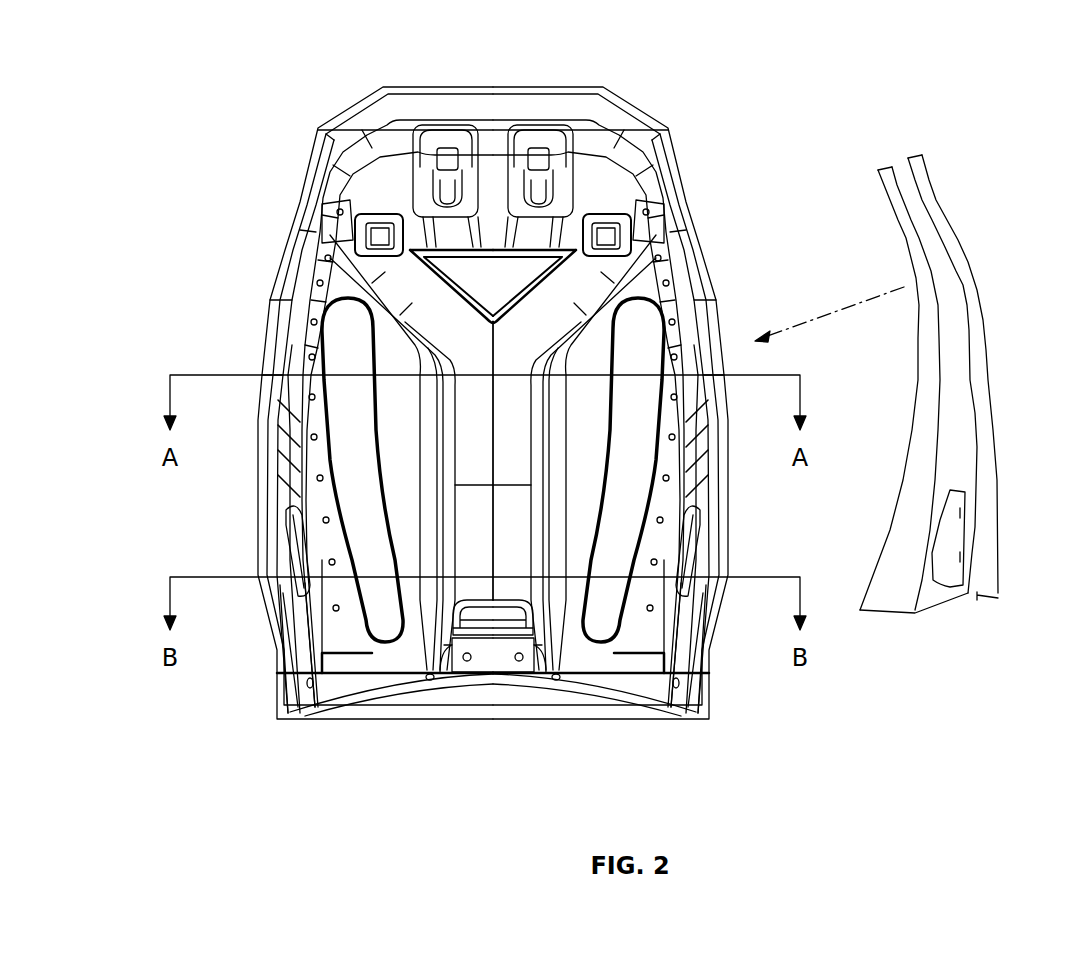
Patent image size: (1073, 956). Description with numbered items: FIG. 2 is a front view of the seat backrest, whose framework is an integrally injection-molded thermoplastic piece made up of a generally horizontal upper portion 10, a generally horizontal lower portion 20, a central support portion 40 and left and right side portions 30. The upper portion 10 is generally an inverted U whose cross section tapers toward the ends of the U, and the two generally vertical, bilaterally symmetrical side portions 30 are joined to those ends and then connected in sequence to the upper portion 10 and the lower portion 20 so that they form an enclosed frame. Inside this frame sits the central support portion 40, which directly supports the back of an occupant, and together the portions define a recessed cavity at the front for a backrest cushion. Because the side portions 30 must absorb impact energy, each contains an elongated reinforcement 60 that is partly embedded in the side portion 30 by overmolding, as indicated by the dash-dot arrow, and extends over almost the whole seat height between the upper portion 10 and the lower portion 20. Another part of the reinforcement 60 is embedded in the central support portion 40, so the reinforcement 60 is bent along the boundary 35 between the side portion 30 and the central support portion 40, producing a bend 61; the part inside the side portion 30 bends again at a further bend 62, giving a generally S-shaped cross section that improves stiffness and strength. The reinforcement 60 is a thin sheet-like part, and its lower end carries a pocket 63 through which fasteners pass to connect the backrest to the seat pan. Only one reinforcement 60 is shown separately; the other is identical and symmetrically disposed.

The upper portion 10 is at (600, 110).
The lower portion 20 is at (398, 658).
The side portion 30 is at (293, 493).
The boundary 35 is at (682, 328).
The central support portion 40 is at (520, 548).
The reinforcement 60 is at (957, 445).
The bend 61 is at (940, 404).
The bend 62 is at (967, 313).
The pocket 63 is at (945, 567).